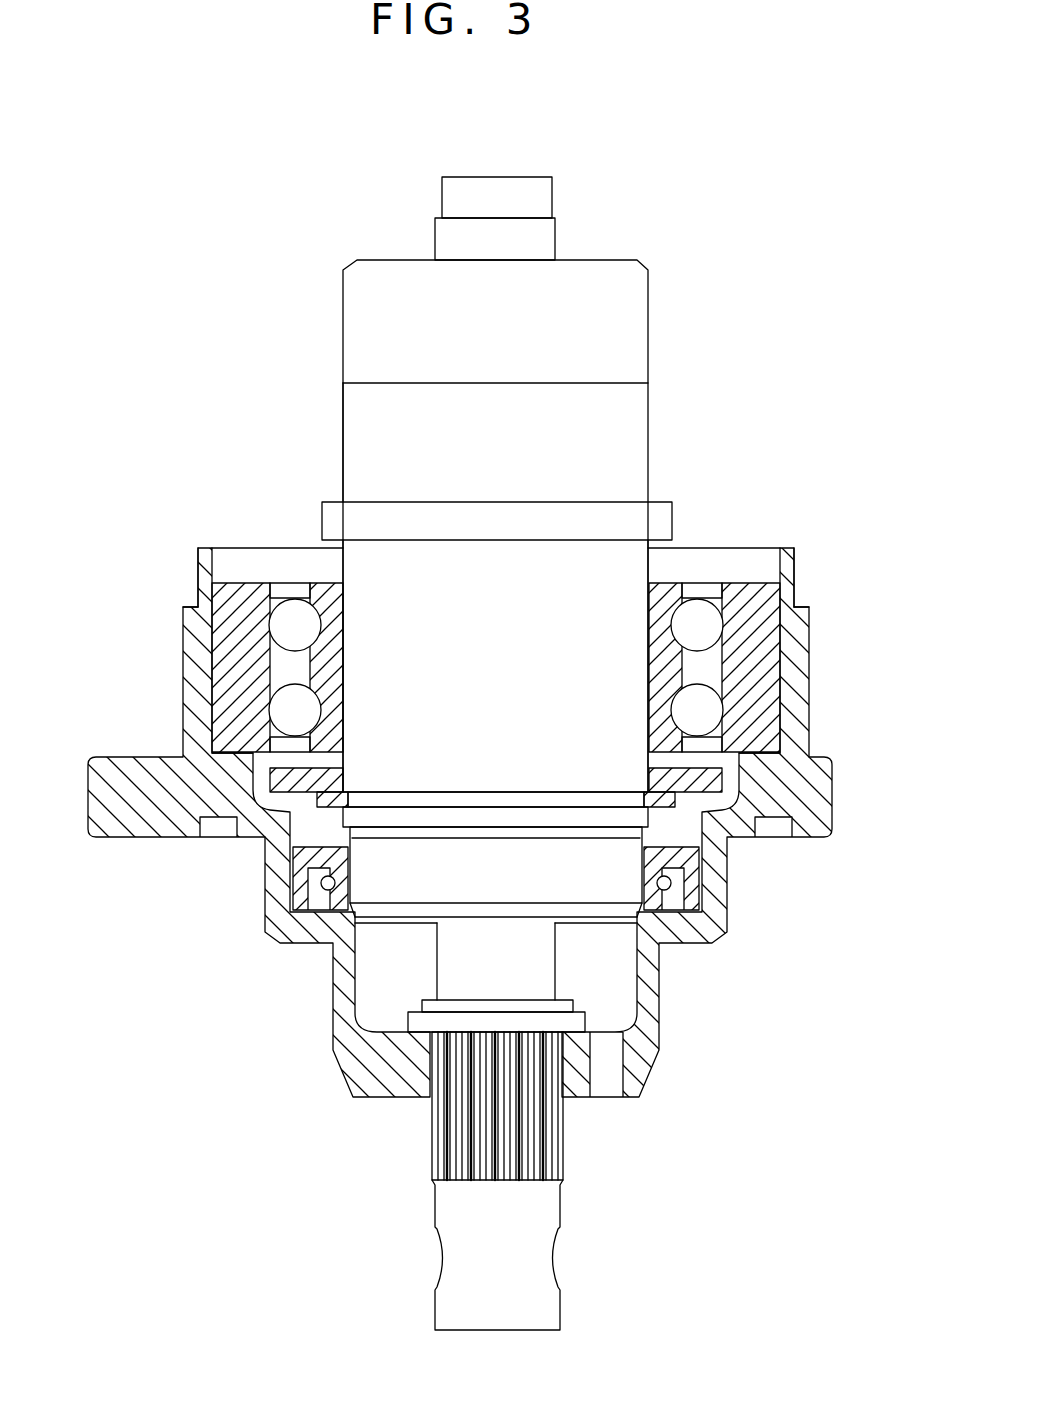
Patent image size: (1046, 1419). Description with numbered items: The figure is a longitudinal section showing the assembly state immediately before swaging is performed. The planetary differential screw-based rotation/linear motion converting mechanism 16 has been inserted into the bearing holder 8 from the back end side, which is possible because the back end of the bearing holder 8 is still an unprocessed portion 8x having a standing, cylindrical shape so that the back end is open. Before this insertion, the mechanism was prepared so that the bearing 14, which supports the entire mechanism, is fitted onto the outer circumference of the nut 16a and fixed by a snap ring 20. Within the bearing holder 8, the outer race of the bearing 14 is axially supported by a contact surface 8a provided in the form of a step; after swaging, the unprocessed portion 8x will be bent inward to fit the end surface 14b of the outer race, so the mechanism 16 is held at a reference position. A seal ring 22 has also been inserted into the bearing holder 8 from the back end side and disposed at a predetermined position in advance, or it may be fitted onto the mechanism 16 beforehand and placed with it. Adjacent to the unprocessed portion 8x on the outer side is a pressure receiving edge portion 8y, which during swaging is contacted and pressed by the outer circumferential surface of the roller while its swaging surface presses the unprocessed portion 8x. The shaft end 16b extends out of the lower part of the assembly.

The bearing holder 8 is at (833, 795).
The unprocessed portion 8x is at (198, 565).
The pressure receiving edge portion 8y is at (183, 607).
The contact surface 8a is at (210, 735).
The bearing 14 is at (648, 648).
The end surface 14b is at (237, 580).
The planetary differential screw-based rotation/linear motion converting mechanism 16 is at (650, 447).
The nut 16a is at (367, 450).
The output shaft 16b is at (550, 1210).
The snap ring 20 is at (335, 815).
The seal ring 22 is at (293, 883).